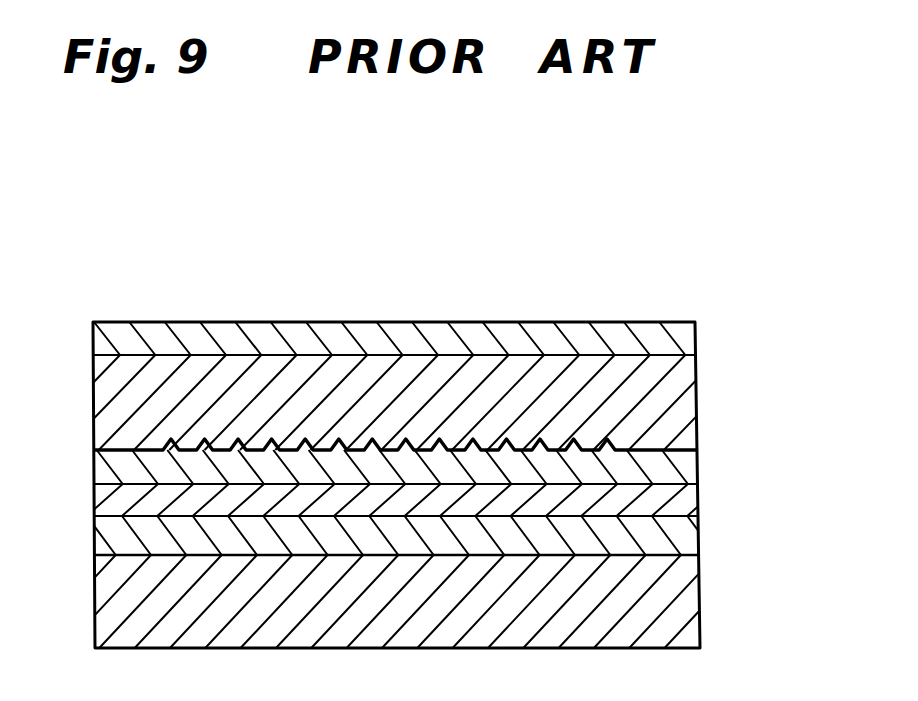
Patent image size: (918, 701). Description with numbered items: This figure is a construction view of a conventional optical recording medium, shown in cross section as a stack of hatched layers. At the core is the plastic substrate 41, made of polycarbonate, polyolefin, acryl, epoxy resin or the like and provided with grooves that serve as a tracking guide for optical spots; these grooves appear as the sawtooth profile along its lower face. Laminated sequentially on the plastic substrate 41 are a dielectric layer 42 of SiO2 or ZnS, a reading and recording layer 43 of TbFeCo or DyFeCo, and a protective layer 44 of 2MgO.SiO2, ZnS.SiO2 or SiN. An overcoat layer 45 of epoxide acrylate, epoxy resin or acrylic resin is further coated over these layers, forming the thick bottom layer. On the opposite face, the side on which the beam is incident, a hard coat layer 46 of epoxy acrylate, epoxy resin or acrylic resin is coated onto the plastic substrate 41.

The hard coat layer 46 is at (643, 333).
The plastic substrate 41 is at (653, 390).
The dielectric layer 42 is at (677, 470).
The reading and recording layer 43 is at (680, 502).
The protective layer 44 is at (680, 536).
The overcoat layer 45 is at (680, 605).